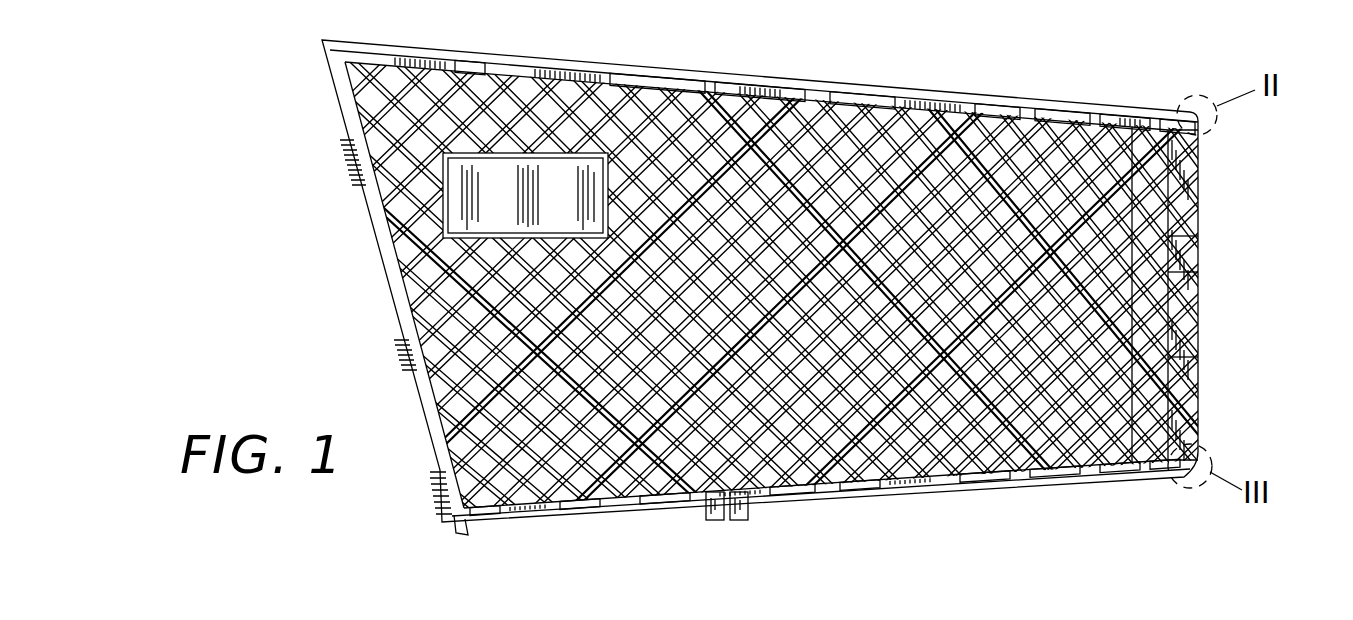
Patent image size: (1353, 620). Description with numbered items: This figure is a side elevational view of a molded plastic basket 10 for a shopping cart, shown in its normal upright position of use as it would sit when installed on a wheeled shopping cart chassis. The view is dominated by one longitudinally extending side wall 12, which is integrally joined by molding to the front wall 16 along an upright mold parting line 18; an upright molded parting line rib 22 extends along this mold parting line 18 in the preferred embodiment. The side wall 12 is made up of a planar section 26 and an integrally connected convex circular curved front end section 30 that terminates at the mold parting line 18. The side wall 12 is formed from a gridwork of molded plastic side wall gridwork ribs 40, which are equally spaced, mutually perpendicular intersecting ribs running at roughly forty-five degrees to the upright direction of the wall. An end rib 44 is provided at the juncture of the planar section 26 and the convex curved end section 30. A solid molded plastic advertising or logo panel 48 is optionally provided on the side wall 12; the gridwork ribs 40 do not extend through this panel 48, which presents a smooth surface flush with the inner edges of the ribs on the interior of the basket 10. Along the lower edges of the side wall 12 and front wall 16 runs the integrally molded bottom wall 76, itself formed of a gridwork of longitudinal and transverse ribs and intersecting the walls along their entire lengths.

The basket 10 is at (723, 56).
The side wall 12 is at (992, 138).
The front wall 16 is at (1200, 242).
The mold parting line 18 is at (1200, 272).
The parting line rib 22 is at (1200, 357).
The planar section 26 is at (643, 107).
The convex circular curved front end section 30 is at (1157, 127).
The side wall gridwork ribs 40 is at (687, 100).
The end rib 44 is at (1113, 140).
The advertising or logo panel 48 is at (478, 200).
The bottom wall 76 is at (1068, 495).